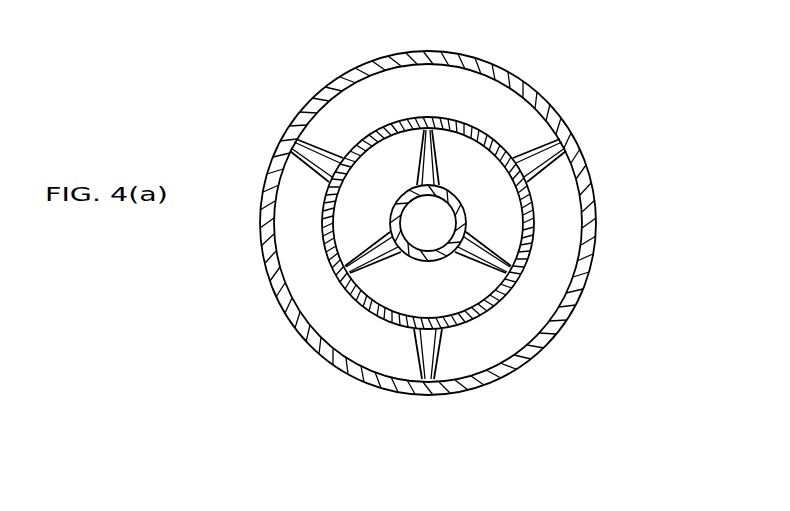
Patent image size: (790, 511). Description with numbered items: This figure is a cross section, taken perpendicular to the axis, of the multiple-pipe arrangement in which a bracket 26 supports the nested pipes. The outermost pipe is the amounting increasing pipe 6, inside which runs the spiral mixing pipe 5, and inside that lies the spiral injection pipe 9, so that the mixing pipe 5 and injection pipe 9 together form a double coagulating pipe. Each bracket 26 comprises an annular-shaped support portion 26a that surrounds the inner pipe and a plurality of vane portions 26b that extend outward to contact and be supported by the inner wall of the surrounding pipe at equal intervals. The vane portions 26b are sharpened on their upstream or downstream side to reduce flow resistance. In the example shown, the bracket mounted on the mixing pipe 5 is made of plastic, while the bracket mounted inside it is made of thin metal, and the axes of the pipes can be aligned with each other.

The spiral mixing pipe 5 is at (545, 233).
The amounting increasing pipe 6 is at (543, 105).
The spiral injection pipe 9 is at (428, 252).
The bracket 26 is at (354, 233).
The annular-shaped support portion 26a is at (392, 221).
The vane portions 26b is at (417, 170).